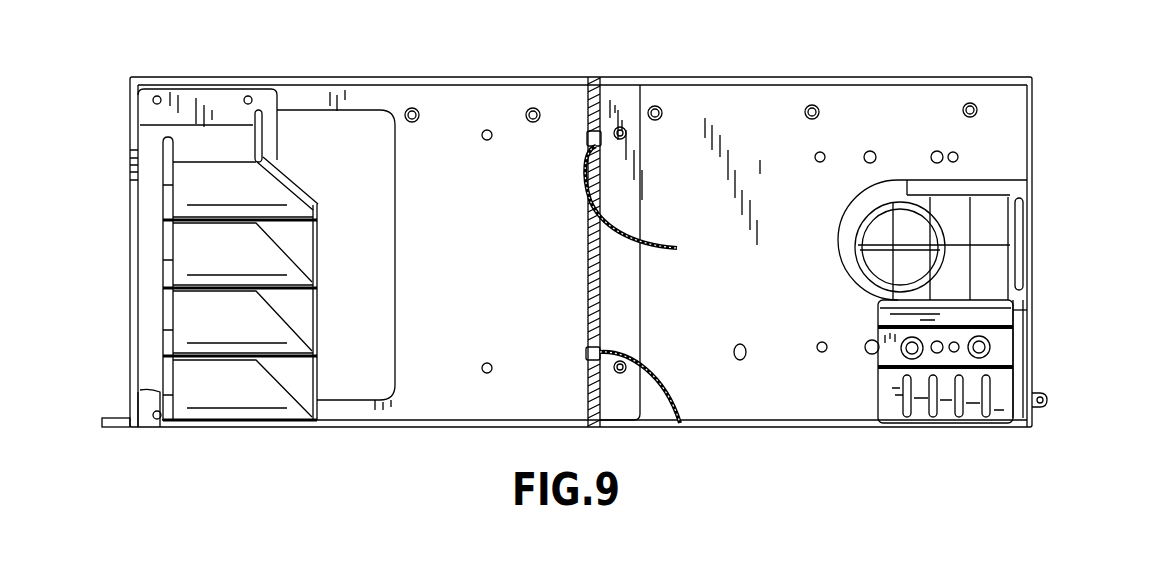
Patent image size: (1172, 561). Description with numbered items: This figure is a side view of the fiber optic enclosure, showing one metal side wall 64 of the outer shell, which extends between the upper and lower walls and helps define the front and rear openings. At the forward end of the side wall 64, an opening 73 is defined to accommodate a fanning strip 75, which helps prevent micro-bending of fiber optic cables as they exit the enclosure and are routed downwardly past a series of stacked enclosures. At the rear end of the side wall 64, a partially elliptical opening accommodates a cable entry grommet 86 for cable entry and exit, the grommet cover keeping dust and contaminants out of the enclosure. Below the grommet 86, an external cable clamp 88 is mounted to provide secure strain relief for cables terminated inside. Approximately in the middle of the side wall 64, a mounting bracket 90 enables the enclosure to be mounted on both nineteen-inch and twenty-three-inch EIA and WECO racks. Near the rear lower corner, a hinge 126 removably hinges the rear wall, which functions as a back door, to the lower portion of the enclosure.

The side wall 64 is at (765, 279).
The opening 73 is at (357, 110).
The fanning strip 75 is at (203, 106).
The cable entry grommet 86 is at (1015, 188).
The external cable clamp 88 is at (1003, 347).
The mounting bracket 90 is at (663, 378).
The hinge 126 is at (1050, 400).